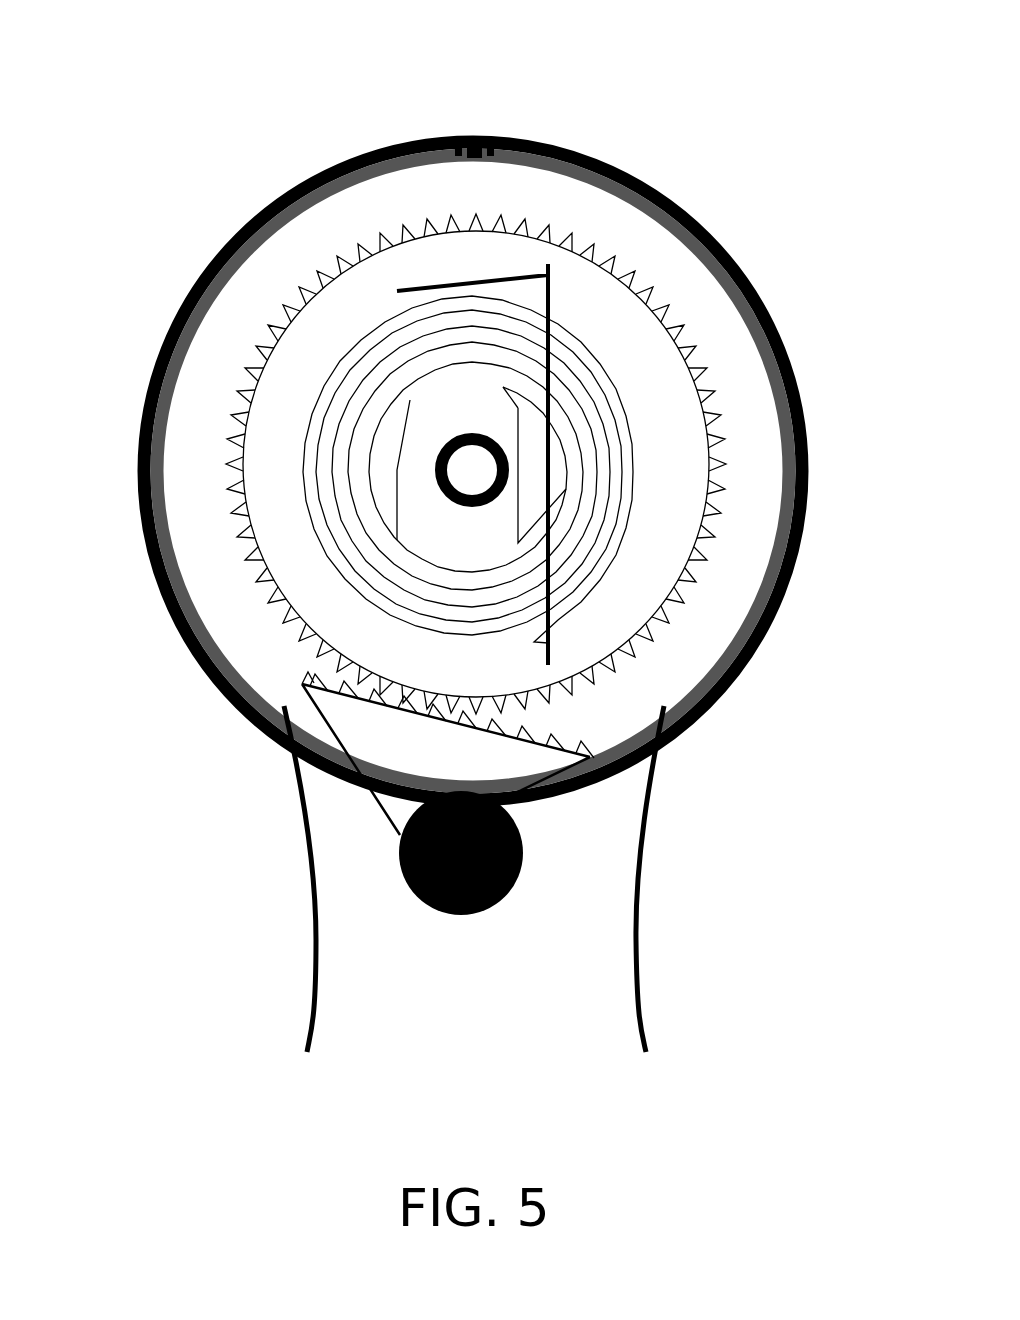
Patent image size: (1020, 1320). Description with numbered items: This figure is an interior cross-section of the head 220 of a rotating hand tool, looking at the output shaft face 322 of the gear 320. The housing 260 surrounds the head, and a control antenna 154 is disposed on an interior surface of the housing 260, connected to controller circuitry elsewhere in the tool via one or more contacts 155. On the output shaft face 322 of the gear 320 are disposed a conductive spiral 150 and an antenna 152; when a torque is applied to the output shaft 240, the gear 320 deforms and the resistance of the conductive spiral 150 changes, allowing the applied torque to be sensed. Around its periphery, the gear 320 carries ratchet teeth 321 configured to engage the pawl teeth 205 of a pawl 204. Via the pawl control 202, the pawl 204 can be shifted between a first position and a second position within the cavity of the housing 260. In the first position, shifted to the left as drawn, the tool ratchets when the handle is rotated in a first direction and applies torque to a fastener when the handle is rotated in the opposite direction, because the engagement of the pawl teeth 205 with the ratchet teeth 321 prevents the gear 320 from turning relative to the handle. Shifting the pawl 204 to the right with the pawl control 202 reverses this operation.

The conductive spiral 150 is at (444, 438).
The antenna 152 is at (592, 302).
The control antenna 154 is at (758, 292).
The contacts 155 is at (483, 138).
The pawl control 202 is at (520, 880).
The pawl 204 is at (362, 764).
The pawl teeth 205 is at (303, 686).
The head 220 is at (488, 530).
The output shaft 240 is at (434, 476).
The housing 260 is at (233, 235).
The gear 320 is at (499, 372).
The ratchet teeth 321 is at (720, 529).
The output shaft face 322 is at (287, 395).